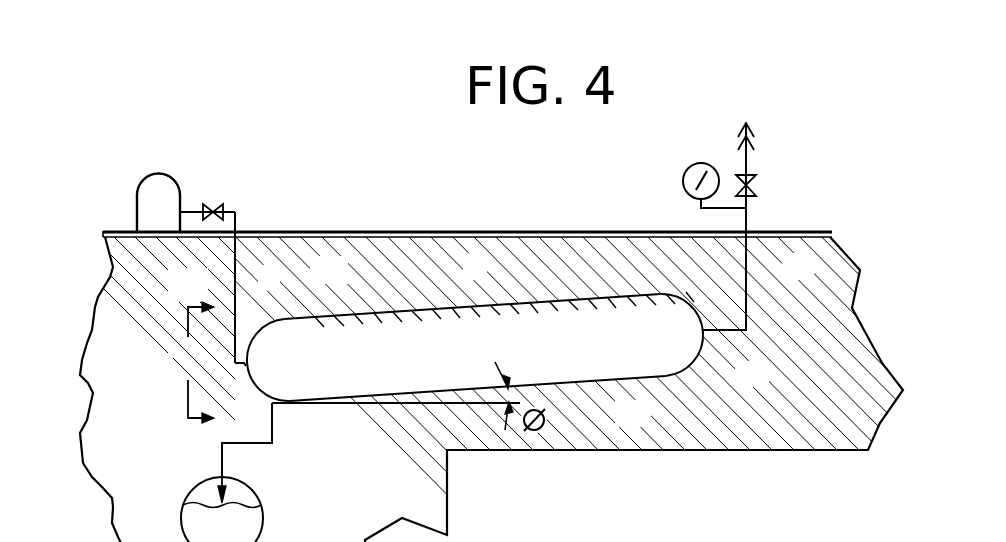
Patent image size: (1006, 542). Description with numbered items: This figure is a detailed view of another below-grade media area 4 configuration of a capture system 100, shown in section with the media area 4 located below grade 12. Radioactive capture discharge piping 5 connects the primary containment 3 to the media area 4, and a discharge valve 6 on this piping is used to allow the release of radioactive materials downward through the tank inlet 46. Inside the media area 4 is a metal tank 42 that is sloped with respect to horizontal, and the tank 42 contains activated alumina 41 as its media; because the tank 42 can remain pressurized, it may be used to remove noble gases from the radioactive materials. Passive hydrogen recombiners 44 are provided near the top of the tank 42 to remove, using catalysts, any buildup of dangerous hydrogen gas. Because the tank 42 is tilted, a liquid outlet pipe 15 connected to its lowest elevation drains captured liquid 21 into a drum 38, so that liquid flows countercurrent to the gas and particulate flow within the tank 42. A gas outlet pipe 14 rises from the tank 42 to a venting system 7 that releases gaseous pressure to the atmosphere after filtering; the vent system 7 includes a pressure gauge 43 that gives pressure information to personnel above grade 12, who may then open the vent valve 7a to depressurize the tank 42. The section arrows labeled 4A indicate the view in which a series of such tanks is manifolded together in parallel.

The capture system 100 is at (873, 255).
The grade 12 is at (794, 232).
The primary containment 3 is at (138, 182).
The discharge valve 6 is at (210, 203).
The radioactive capture discharge piping 5 is at (237, 300).
The tank inlet 46 is at (236, 363).
The media area 4 is at (481, 305).
The activated alumina 41 is at (683, 353).
The metal tank 42 is at (593, 384).
The passive hydrogen recombiners 44 is at (322, 318).
The gas outlet pipe 14 is at (748, 293).
The venting system 7 is at (755, 133).
The vent valve 7a is at (757, 186).
The pressure gauge 43 is at (690, 167).
The view 4A- 4A is at (191, 367).
The liquid outlet pipe 15 is at (214, 478).
The captured liquid 21 is at (222, 509).
The drum 38 is at (262, 505).